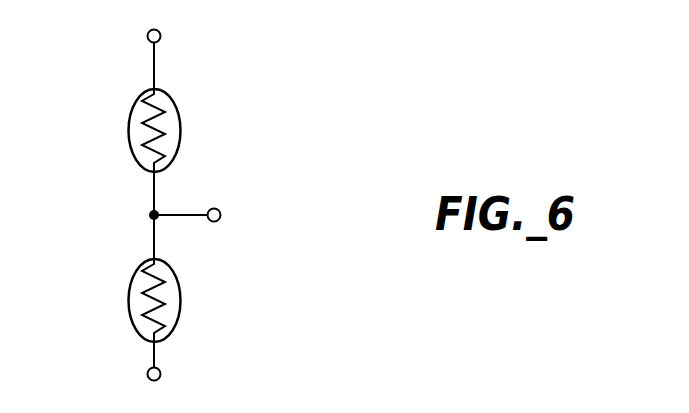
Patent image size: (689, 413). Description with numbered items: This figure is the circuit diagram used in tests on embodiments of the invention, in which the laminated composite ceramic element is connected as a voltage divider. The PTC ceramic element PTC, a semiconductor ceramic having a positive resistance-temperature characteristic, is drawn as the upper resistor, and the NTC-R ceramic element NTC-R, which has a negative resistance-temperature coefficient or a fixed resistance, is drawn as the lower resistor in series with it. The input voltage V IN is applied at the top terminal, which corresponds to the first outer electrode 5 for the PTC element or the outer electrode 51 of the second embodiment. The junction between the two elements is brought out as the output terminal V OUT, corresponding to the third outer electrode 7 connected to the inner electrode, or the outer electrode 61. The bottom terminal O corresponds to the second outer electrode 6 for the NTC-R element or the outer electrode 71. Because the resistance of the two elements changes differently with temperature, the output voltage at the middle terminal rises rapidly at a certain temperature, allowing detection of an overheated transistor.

The first outer electrode 5 is at (220, 55).
The outer electrode 51 is at (220, 55).
The third outer electrode 7 is at (263, 215).
The outer electrode 61 is at (263, 215).
The second outer electrode 6 is at (212, 362).
The outer electrode 71 is at (212, 362).
The PTC ceramic element PTC is at (181, 130).
The NTC-R ceramic element NTC-R is at (197, 300).